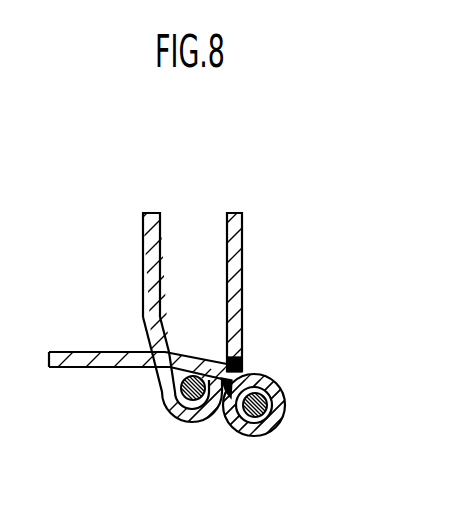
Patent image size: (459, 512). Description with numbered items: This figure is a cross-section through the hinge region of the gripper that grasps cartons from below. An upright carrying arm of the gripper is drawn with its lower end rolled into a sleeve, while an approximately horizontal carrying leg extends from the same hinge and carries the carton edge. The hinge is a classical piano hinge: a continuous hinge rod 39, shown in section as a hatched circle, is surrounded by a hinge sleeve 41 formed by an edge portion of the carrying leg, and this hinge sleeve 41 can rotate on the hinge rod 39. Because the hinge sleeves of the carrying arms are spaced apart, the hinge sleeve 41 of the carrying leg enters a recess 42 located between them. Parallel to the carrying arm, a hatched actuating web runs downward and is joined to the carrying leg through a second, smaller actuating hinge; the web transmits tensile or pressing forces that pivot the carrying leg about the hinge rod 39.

The hinge rod 39 is at (283, 430).
The hinge sleeve 41 is at (284, 399).
The recess 42 is at (243, 363).